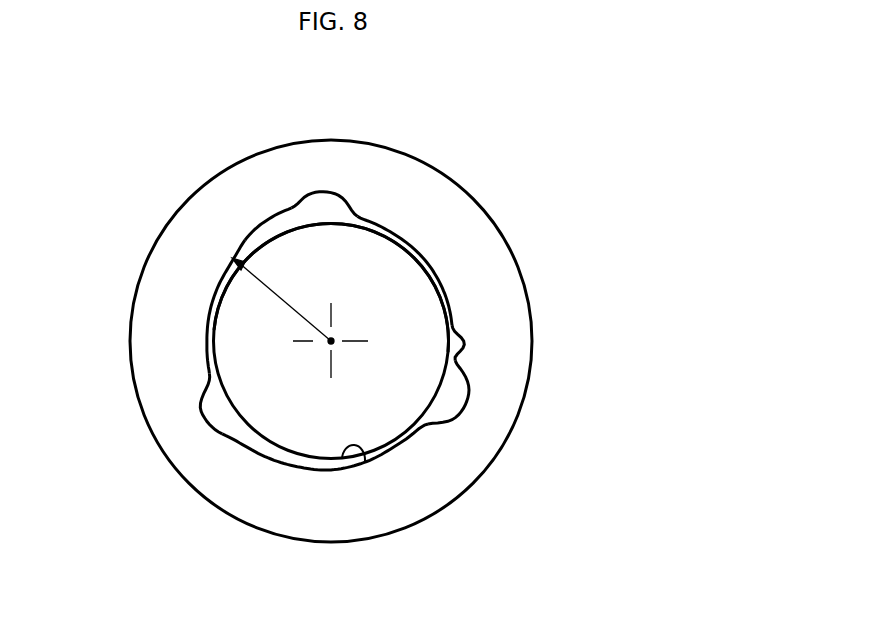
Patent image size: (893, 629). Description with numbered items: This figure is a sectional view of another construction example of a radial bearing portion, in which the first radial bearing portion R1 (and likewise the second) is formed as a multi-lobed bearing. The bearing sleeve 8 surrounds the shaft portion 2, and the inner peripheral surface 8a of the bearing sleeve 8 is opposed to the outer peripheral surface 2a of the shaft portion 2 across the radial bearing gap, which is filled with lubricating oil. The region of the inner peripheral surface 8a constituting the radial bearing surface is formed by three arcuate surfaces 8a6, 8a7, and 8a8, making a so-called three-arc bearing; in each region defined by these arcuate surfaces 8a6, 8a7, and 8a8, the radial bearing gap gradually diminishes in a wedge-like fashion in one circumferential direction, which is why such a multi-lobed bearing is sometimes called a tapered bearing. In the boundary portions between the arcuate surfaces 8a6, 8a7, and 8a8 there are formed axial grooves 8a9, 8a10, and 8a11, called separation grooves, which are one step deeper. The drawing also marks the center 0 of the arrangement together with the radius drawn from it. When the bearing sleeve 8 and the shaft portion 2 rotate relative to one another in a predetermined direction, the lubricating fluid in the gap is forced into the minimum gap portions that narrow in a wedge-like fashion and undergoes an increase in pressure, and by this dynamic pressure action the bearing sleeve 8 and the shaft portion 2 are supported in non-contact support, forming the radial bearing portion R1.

The bearing sleeve 8 is at (436, 180).
The inner peripheral surface of the bearing sleeve 8a is at (408, 259).
The arcuate surface 8a6 is at (460, 344).
The arcuate surface 8a7 is at (280, 233).
The arcuate surface 8a8 is at (365, 461).
The axial groove 8a9 is at (440, 423).
The axial groove 8a10 is at (323, 203).
The axial groove 8a11 is at (212, 408).
The shaft portion 2 is at (425, 300).
The outer peripheral surface of the shaft portion 2a is at (450, 360).
The center 0 is at (329, 343).
The first radial bearing portion R1 is at (155, 228).